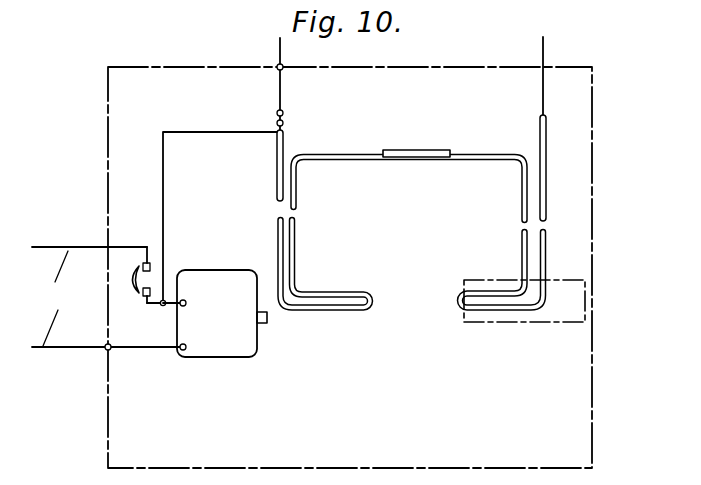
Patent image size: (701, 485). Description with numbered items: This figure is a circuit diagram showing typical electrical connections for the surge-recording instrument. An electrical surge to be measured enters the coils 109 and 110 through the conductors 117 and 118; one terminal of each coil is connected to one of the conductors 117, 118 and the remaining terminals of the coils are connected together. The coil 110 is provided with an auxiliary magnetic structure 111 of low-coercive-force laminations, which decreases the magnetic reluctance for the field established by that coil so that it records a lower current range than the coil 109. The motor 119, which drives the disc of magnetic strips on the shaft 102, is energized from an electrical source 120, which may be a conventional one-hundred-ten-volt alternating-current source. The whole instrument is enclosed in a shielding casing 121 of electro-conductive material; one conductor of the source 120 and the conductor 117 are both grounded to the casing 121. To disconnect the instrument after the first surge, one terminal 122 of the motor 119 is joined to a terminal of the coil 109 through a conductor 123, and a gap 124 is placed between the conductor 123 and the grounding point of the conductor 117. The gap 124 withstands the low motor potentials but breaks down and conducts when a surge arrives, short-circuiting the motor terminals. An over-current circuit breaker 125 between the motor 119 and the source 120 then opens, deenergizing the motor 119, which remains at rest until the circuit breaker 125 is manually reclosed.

The shaft 102 is at (264, 326).
The coil 109 is at (370, 309).
The coil 110 is at (490, 311).
The auxiliary magnetic structure 111 is at (513, 323).
The conductor 117 is at (278, 52).
The conductor 118 is at (545, 52).
The motor 119 is at (230, 352).
The electrical source 120 is at (106, 298).
The shielding casing 121 is at (593, 440).
The terminal 122 is at (186, 302).
The conductor 123 is at (240, 130).
The gap 124 is at (287, 121).
The over-current circuit breaker 125 is at (133, 285).